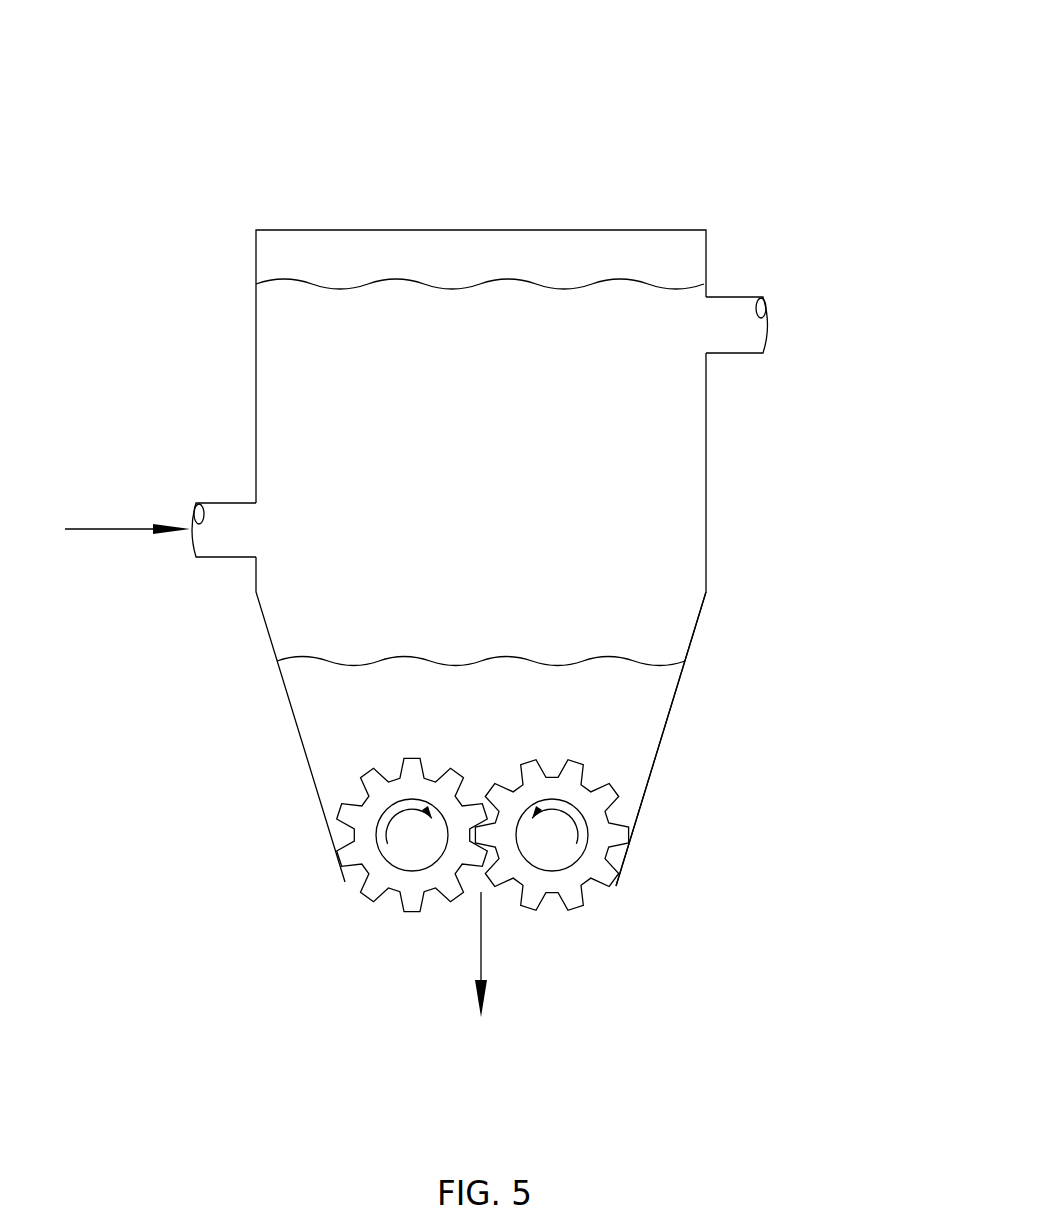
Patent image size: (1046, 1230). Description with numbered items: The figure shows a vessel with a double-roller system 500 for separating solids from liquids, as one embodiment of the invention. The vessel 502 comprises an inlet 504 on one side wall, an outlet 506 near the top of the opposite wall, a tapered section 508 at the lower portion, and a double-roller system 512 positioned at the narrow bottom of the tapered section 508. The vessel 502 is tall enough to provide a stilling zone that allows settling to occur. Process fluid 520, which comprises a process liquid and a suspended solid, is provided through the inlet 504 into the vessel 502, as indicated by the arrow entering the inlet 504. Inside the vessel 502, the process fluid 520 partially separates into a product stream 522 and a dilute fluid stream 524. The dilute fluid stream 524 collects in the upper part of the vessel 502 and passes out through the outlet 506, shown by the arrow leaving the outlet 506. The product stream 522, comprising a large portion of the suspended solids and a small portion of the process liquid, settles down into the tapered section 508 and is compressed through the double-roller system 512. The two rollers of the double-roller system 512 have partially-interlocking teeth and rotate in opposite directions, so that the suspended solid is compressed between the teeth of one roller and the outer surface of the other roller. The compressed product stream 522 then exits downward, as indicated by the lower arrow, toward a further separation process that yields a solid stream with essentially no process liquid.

The vessel with a double-roller system 500 is at (142, 75).
The vessel 502 is at (312, 230).
The inlet 504 is at (230, 503).
The outlet 506 is at (735, 353).
The tapered section 508 is at (665, 729).
The double-roller system 512 is at (345, 855).
The process fluid 520 is at (100, 530).
The product stream 522 is at (308, 707).
The dilute fluid stream 524 is at (278, 343).